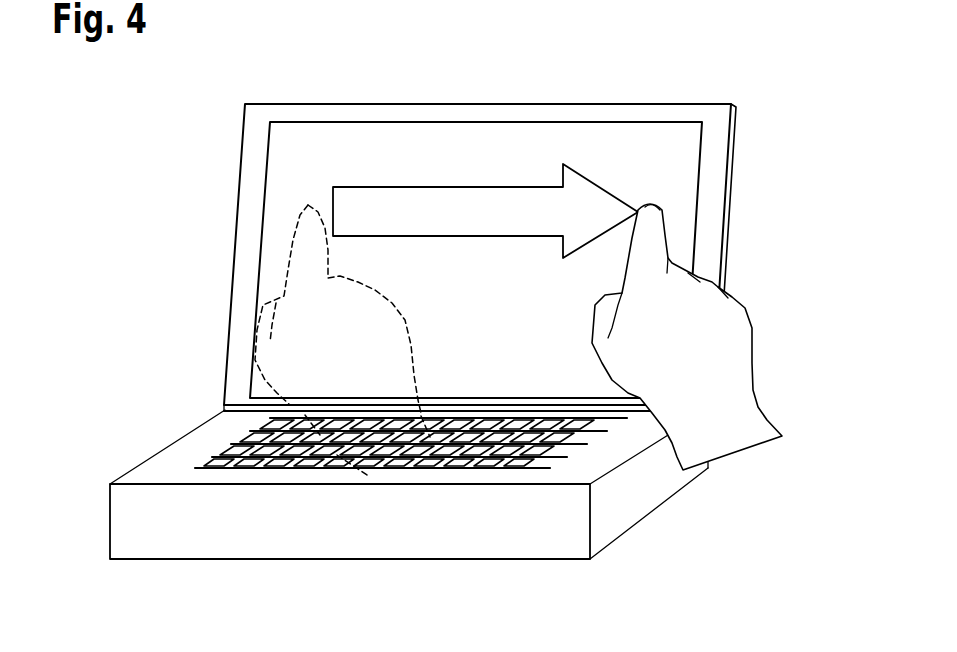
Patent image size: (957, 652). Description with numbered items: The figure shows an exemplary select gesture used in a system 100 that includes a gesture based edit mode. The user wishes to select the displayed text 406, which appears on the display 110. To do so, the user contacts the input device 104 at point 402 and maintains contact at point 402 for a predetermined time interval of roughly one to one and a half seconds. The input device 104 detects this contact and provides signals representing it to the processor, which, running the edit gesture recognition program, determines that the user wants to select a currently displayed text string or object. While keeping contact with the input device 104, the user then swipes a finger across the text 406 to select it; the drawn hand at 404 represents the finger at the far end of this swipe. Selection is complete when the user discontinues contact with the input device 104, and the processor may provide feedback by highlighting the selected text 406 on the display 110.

The system 100 is at (522, 535).
The input device 104 is at (459, 142).
The display 110 is at (678, 133).
The point 402 is at (308, 205).
The final hand position 404 is at (653, 197).
The text 406 is at (410, 198).